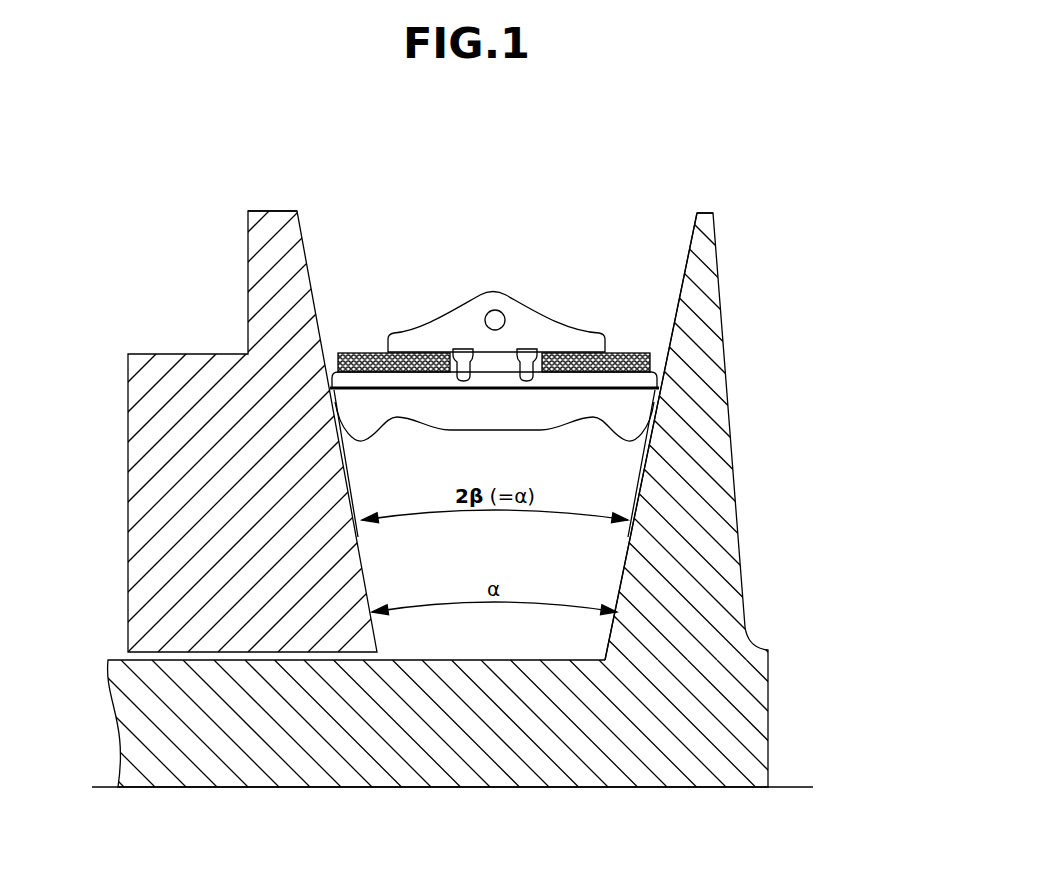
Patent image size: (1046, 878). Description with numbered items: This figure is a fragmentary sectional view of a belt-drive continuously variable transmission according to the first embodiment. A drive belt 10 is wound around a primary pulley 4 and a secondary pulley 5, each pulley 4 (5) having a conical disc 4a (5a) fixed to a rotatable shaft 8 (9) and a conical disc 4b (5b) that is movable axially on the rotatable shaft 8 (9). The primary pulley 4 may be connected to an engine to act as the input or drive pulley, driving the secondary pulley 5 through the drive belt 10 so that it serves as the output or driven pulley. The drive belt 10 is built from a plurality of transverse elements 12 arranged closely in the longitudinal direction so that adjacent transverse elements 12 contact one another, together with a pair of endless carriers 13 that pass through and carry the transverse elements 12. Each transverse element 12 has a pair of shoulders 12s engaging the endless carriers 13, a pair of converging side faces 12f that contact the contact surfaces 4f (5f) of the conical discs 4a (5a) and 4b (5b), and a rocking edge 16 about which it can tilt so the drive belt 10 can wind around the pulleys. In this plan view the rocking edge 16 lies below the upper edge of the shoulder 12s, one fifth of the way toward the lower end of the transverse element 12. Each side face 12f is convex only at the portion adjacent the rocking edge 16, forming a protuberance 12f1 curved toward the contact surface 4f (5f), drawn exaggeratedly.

The primary pulley 4 is at (740, 237).
The secondary pulley 5 is at (614, 417).
The conical disc 4a is at (712, 353).
The conical disc 5a is at (727, 436).
The conical disc 4b is at (212, 380).
The conical disc 5b is at (389, 431).
The contact surface 4f is at (302, 245).
The contact surface 5f is at (480, 199).
The rotatable shaft 8 is at (437, 723).
The rotatable shaft 9 is at (437, 723).
The drive belt 10 is at (505, 255).
The transverse element 12 is at (450, 298).
The side face 12f is at (322, 410).
The protuberance 12f1 is at (658, 388).
The shoulder 12s is at (386, 374).
The endless carrier 13 is at (361, 352).
The rocking edge 16 is at (500, 388).